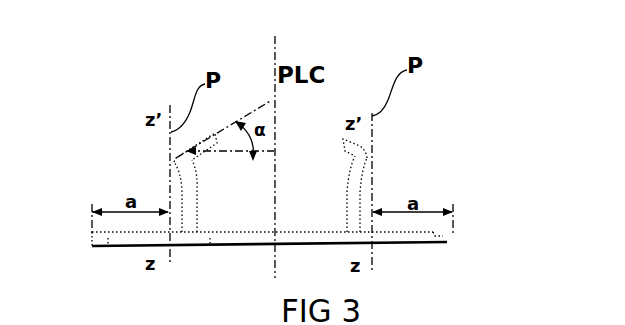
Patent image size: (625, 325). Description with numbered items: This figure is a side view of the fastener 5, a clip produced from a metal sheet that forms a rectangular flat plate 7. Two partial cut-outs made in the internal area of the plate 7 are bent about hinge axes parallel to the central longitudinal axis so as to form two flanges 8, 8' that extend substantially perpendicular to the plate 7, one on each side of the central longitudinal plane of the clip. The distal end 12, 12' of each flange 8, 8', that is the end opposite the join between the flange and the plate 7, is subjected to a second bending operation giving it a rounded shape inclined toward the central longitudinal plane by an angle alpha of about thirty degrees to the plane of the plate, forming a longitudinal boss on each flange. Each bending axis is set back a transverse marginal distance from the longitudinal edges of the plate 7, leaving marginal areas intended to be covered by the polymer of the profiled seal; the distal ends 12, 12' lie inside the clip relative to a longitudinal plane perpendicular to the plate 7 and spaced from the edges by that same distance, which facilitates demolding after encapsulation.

The fastener 5 is at (123, 103).
The plate 7 is at (440, 234).
The flange 8 is at (139, 176).
The flange 8' is at (409, 172).
The distal end 12 is at (140, 141).
The distal end 12' is at (405, 137).